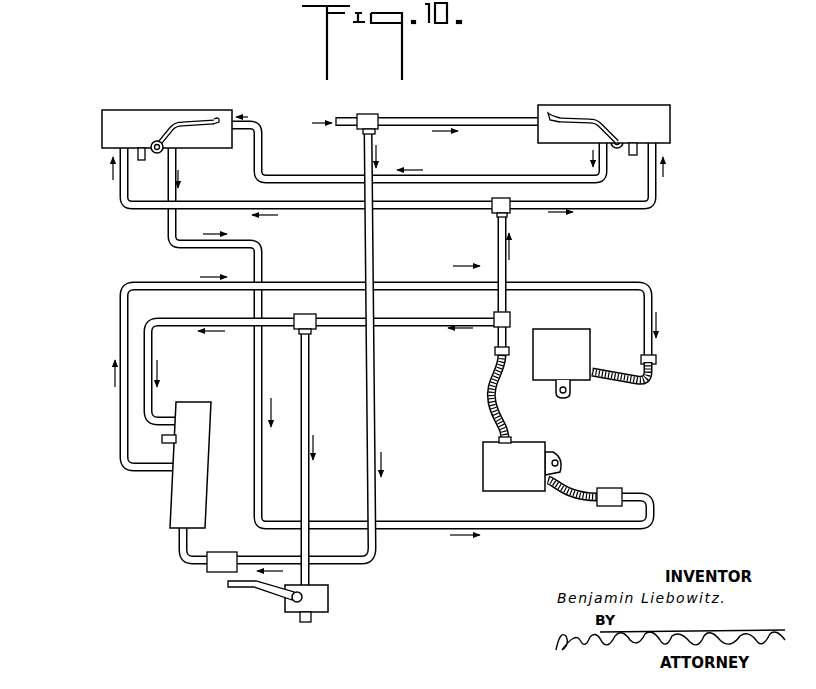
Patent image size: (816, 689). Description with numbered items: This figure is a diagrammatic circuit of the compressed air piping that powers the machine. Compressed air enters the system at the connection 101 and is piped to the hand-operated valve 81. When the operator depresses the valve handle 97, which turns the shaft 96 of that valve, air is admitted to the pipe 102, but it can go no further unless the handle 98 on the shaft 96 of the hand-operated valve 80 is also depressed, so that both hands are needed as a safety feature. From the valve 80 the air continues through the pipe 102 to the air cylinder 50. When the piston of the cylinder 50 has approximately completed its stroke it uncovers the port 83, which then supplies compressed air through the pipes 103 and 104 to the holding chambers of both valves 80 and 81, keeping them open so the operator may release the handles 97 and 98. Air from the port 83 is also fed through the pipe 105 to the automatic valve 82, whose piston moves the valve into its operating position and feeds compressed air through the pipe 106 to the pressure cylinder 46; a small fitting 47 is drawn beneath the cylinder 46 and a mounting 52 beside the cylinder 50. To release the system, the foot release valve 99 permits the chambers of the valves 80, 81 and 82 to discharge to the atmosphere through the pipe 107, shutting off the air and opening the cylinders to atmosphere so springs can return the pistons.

The pressure cylinder 46 is at (558, 330).
The drain cock 47 is at (567, 392).
The air cylinder 50 is at (497, 458).
The pump mounting 52 is at (561, 462).
The hand-operated valve 80 is at (102, 123).
The hand-operated valve 81 is at (642, 108).
The automatic valve 82 is at (203, 440).
The port 83 is at (507, 440).
The shaft 96 is at (156, 140).
The valve handle 97 is at (552, 110).
The valve handle 98 is at (216, 116).
The foot release valve 99 is at (329, 597).
The compressed air line connection 101 is at (344, 118).
The pipe 102 is at (480, 176).
The pipe 103 is at (498, 358).
The pipe 104 is at (600, 206).
The pipe 105 is at (205, 314).
The pipe 106 is at (173, 277).
The pipe 107 is at (307, 388).